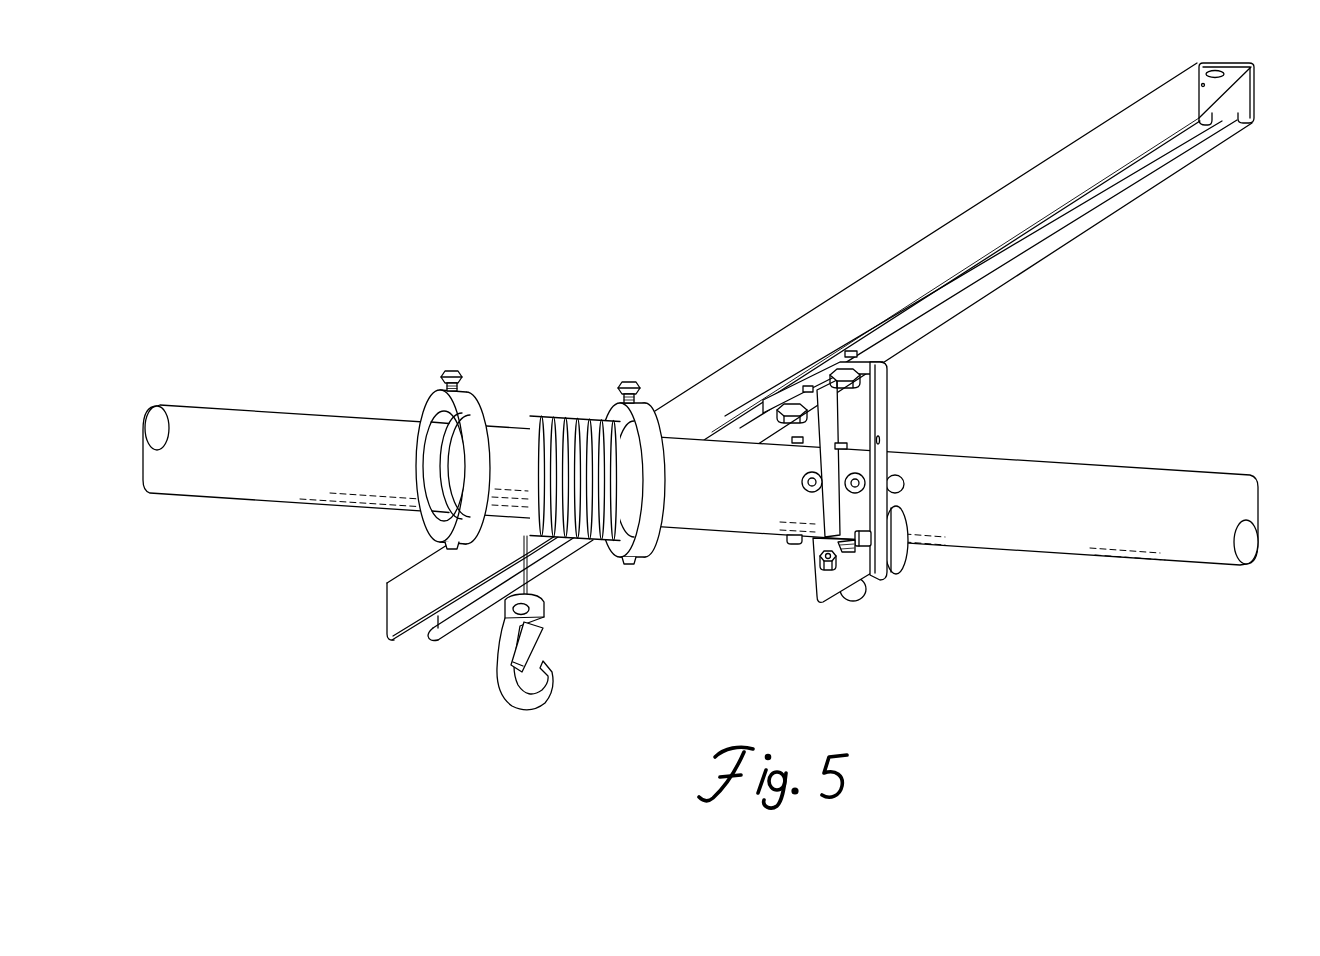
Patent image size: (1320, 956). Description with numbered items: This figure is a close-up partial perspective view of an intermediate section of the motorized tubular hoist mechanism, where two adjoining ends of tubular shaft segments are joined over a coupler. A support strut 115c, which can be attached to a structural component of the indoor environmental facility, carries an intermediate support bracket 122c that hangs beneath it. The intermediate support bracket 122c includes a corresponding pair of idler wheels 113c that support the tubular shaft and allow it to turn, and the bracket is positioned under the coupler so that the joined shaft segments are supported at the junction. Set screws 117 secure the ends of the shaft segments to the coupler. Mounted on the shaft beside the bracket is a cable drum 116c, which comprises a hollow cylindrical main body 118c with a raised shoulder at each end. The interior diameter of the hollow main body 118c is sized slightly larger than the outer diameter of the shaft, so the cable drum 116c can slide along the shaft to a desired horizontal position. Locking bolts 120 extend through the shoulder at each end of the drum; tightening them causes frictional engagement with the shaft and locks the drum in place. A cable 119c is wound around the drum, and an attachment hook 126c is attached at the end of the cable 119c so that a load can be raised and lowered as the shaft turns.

The idler wheels 113c is at (906, 580).
The support strut 115c is at (948, 222).
The cable drum 116c is at (535, 460).
The set screws 117 is at (802, 482).
The hollow cylindrical main body 118c is at (652, 540).
The cable 119c is at (571, 540).
The locking bolts 120 is at (441, 374).
The intermediate support bracket 122c is at (888, 415).
The attachment hook 126c is at (531, 710).